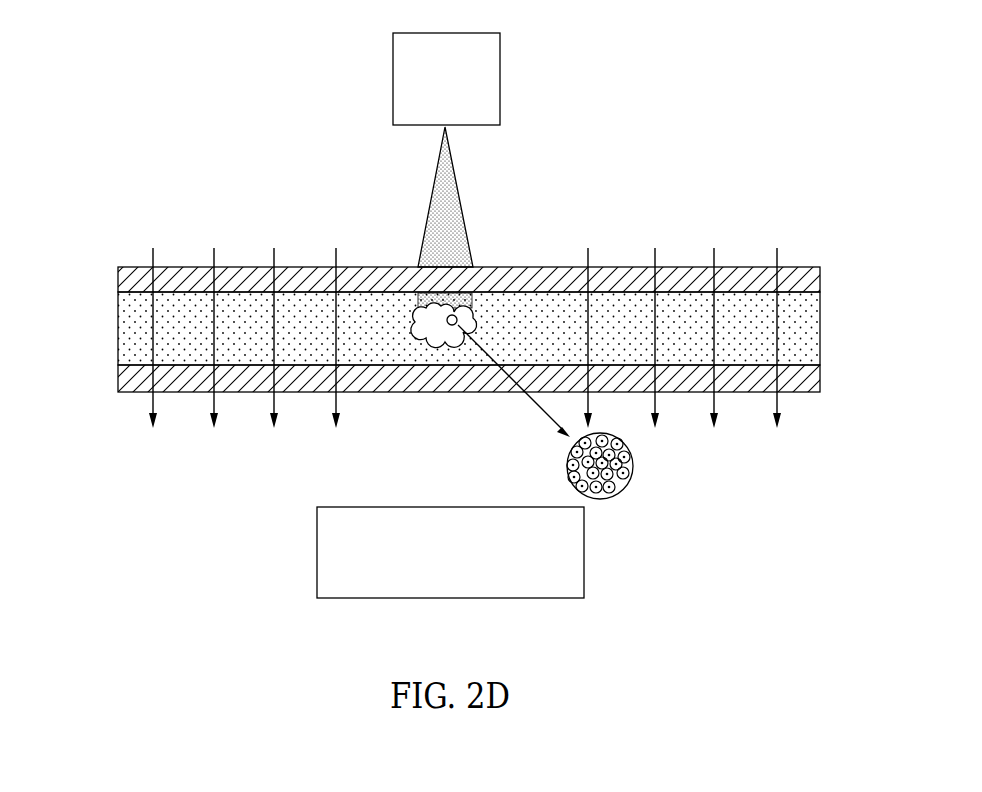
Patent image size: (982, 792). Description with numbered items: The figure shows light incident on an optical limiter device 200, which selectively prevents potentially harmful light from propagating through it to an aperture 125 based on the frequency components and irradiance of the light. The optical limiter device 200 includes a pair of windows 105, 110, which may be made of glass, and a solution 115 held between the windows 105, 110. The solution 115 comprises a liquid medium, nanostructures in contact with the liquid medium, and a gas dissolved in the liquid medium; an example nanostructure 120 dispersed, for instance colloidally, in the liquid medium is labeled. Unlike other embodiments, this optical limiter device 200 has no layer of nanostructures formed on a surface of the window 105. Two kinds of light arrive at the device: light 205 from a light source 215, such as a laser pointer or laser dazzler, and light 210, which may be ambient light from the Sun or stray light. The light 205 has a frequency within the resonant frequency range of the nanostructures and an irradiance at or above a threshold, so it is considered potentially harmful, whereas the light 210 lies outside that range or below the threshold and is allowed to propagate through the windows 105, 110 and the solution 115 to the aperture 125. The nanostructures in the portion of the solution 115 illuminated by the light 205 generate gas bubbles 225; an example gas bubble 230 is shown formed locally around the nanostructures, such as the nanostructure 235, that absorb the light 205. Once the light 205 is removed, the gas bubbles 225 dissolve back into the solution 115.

The optical limiter device 200 is at (130, 152).
The window 105 is at (118, 273).
The window 110 is at (118, 372).
The solution 115 is at (813, 328).
The nanostructure 120 is at (807, 353).
The aperture 125 is at (317, 533).
The light 205 is at (435, 180).
The light 210 is at (350, 245).
The light source 215 is at (393, 57).
The gas bubbles 225 is at (428, 340).
The gas bubble 230 is at (627, 487).
The nanostructure 235 is at (630, 453).